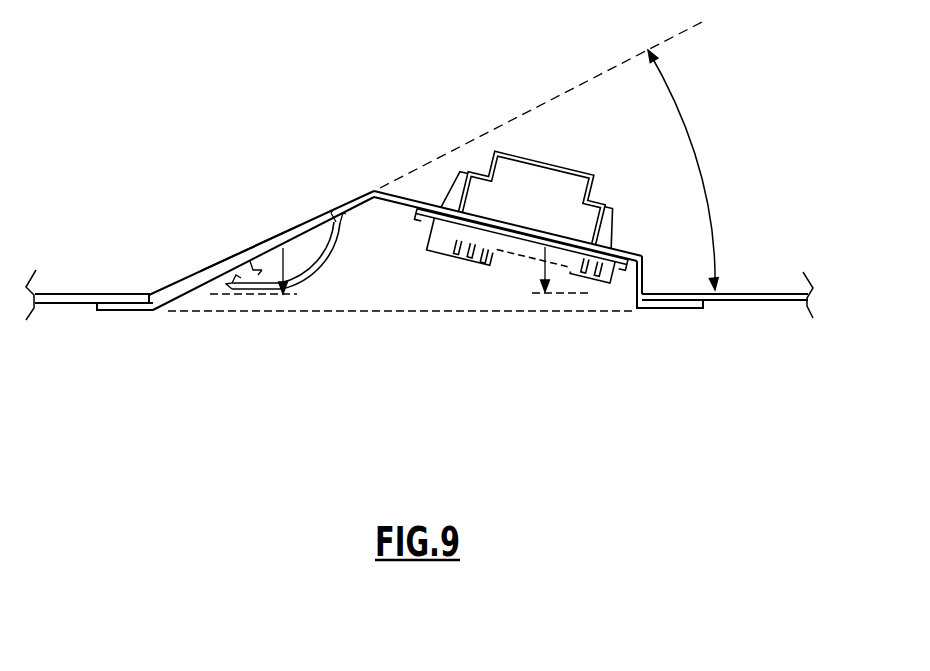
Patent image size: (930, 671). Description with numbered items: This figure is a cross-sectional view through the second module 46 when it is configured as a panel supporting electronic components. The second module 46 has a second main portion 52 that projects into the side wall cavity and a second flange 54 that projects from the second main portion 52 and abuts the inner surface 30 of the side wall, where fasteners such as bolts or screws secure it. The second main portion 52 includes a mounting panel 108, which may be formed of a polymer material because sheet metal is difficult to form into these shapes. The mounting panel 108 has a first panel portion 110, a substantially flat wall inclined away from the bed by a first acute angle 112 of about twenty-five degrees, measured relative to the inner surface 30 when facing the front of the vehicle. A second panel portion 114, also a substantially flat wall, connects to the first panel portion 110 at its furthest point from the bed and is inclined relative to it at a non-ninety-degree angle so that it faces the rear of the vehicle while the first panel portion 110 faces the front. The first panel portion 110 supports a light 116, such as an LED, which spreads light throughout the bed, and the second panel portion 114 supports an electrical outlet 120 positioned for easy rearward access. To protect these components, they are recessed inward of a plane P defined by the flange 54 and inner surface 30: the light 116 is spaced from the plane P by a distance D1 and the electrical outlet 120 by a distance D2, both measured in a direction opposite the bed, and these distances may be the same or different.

The inner surface 30 is at (763, 300).
The second module 46 is at (423, 235).
The second main portion 52 is at (343, 190).
The second flange 54 is at (120, 312).
The mounting panel 108 is at (238, 247).
The first panel portion 110 is at (188, 280).
The first acute angle 112 is at (689, 133).
The second panel portion 114 is at (622, 253).
The light 116 is at (320, 273).
The electrical outlet 120 is at (487, 268).
The plane P is at (427, 312).
The distance D1 is at (283, 321).
The distance D2 is at (545, 321).